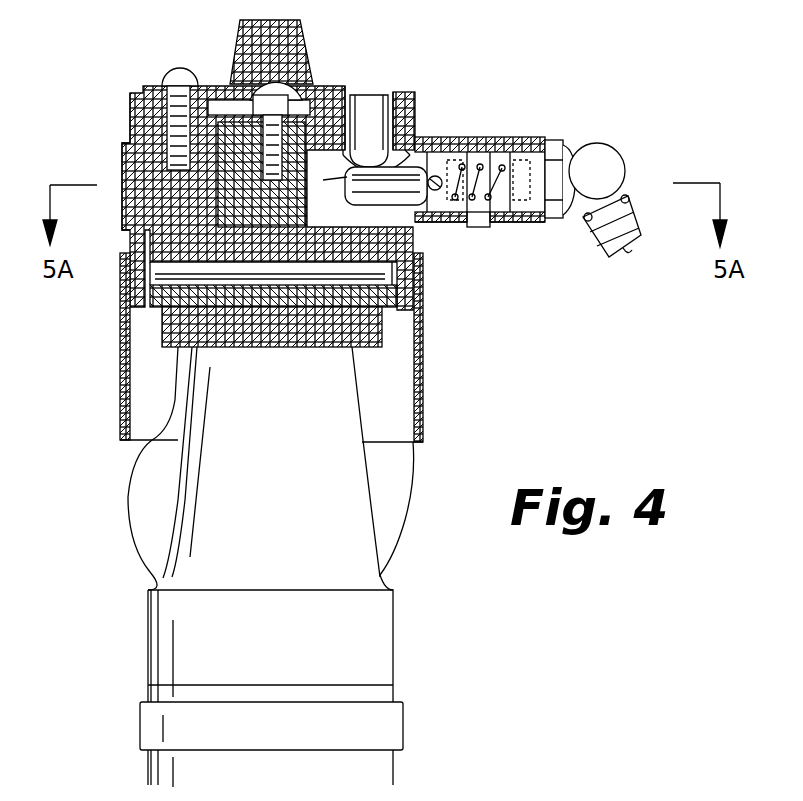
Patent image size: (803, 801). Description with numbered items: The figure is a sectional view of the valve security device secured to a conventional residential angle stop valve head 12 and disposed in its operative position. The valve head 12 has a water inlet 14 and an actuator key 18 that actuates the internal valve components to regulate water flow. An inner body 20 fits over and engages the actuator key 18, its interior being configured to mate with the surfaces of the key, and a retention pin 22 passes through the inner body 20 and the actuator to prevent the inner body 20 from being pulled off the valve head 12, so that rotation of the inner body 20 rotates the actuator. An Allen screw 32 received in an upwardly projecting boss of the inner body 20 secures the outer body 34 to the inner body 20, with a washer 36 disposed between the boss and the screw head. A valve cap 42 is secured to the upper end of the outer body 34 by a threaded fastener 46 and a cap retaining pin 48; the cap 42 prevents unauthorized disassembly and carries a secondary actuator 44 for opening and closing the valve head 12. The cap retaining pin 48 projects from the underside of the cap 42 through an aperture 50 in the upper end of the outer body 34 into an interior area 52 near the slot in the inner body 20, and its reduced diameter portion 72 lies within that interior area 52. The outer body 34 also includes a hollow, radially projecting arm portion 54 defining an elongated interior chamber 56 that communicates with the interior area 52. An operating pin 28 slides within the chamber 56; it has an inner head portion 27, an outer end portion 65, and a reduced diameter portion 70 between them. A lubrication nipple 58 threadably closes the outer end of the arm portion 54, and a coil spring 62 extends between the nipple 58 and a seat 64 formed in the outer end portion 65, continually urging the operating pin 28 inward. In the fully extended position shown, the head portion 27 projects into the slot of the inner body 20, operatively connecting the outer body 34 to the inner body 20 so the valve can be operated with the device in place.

The valve head 12 is at (417, 463).
The water inlet 14 is at (395, 757).
The actuator key 18 is at (172, 415).
The inner body 20 is at (155, 310).
The retention pin 22 is at (378, 312).
The inner head portion 27 is at (367, 275).
The operating pin 28 is at (368, 105).
The Allen screw 32 is at (253, 92).
The outer body 34 is at (122, 163).
The washer 36 is at (307, 83).
The valve cap 42 is at (338, 86).
The secondary actuator 44 is at (243, 45).
The threaded fastener 46 is at (163, 78).
The cap retaining pin 48 is at (362, 107).
The aperture 50 is at (413, 137).
The interior area 52 is at (390, 203).
The arm portion 54 is at (528, 140).
The interior chamber 56 is at (495, 157).
The lubrication nipple 58 is at (608, 153).
The coil spring 62 is at (500, 213).
The seat 64 is at (453, 160).
The outer end portion 65 is at (437, 200).
The reduced diameter portion 70 is at (425, 157).
The reduced diameter portion 72 is at (410, 157).